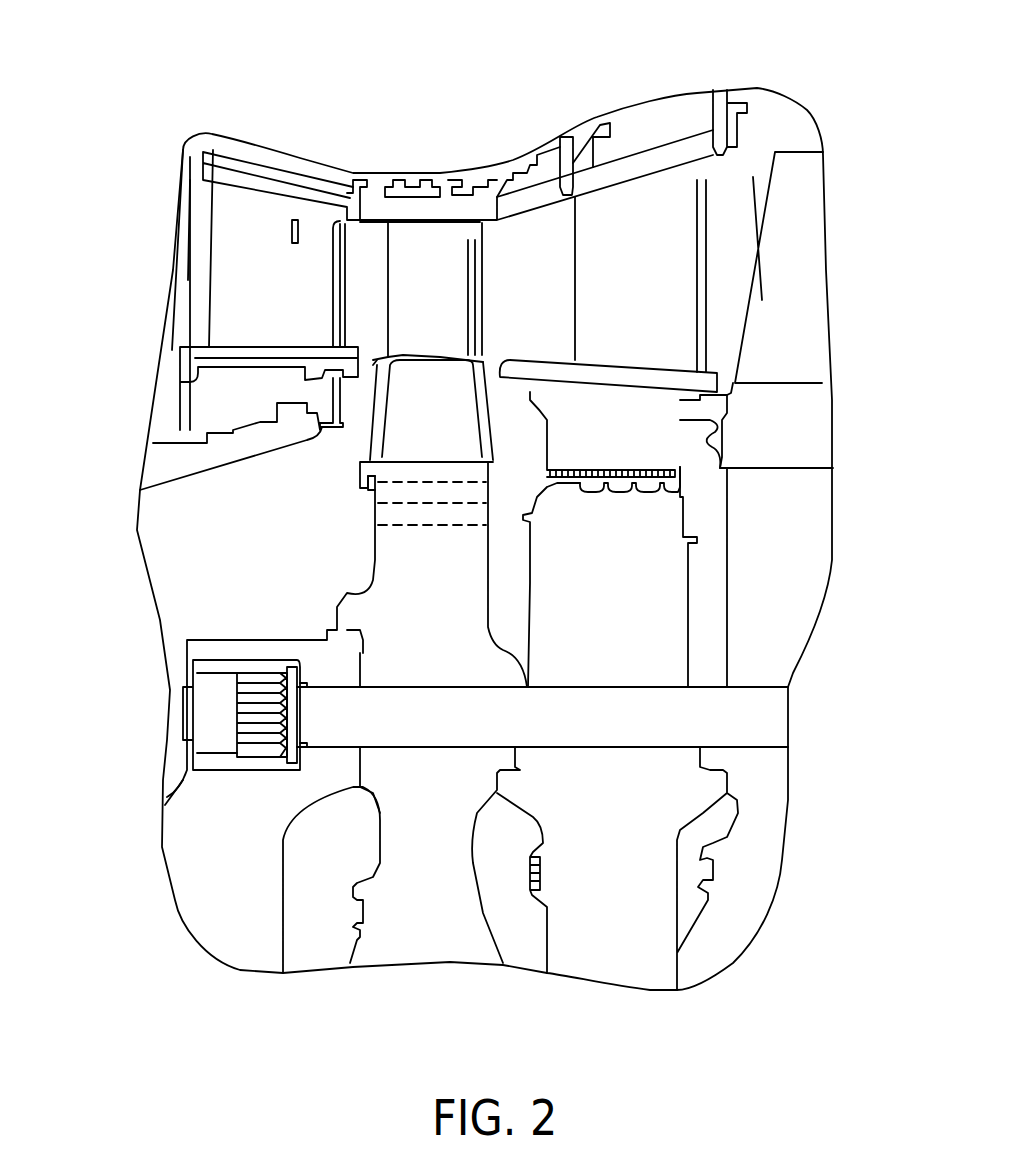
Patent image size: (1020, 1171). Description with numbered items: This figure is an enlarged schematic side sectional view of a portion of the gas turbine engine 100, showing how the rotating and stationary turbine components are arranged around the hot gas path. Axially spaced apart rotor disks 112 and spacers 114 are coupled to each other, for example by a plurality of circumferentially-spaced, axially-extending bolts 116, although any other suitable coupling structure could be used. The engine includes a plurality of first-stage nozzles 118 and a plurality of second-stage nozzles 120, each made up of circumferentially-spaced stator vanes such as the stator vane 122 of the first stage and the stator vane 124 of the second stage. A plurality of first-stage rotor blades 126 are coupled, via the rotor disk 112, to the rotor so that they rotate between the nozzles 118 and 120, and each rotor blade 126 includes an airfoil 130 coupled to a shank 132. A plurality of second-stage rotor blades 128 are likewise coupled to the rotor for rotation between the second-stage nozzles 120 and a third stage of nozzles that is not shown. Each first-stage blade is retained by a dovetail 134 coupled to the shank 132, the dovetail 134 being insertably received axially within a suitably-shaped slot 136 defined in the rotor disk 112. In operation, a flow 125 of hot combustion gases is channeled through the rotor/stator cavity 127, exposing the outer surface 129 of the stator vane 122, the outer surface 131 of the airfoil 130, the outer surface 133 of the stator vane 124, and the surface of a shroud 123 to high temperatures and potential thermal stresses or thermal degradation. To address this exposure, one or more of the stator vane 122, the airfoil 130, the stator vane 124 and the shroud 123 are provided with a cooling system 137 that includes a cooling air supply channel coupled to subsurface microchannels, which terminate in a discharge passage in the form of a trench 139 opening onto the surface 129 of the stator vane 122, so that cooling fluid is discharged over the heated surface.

The gas turbine engine 100 is at (382, 86).
The rotor disk 112 is at (425, 942).
The spacer 114 is at (603, 963).
The bolt 116 is at (753, 717).
The first-stage nozzle 118 is at (247, 243).
The second-stage nozzle 120 is at (627, 197).
The stator vane 122 is at (307, 290).
The shroud 123 is at (417, 215).
The stator vane 124 is at (648, 310).
The flow of hot combustion gases 125 is at (142, 287).
The first-stage rotor blade 126 is at (457, 230).
The rotor/stator cavity 127 is at (553, 314).
The second-stage rotor blade 128 is at (800, 153).
The outer surface 129 is at (235, 328).
The airfoil 130 is at (453, 315).
The outer surface 131 is at (411, 239).
The shank 132 is at (453, 426).
The outer surface 133 is at (610, 215).
The dovetail 134 is at (412, 513).
The slot 136 is at (345, 508).
The cooling system 137 is at (294, 200).
The trench 139 is at (290, 232).